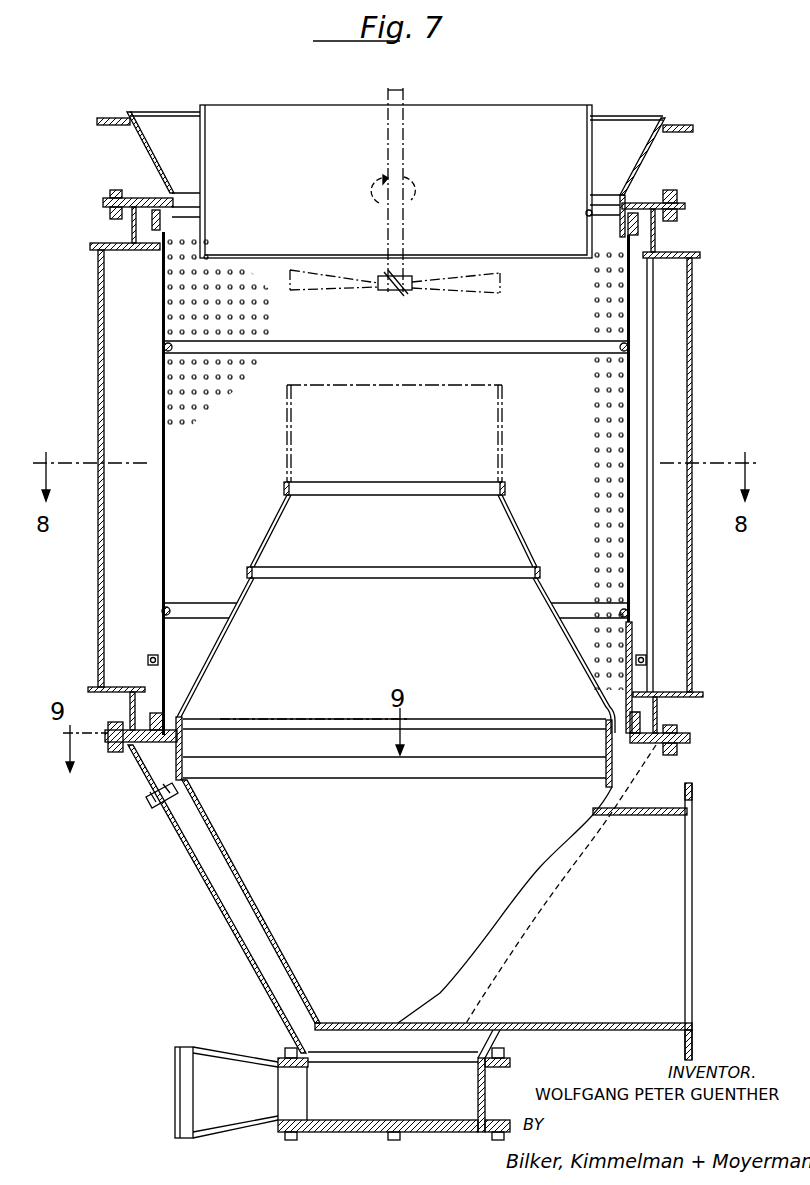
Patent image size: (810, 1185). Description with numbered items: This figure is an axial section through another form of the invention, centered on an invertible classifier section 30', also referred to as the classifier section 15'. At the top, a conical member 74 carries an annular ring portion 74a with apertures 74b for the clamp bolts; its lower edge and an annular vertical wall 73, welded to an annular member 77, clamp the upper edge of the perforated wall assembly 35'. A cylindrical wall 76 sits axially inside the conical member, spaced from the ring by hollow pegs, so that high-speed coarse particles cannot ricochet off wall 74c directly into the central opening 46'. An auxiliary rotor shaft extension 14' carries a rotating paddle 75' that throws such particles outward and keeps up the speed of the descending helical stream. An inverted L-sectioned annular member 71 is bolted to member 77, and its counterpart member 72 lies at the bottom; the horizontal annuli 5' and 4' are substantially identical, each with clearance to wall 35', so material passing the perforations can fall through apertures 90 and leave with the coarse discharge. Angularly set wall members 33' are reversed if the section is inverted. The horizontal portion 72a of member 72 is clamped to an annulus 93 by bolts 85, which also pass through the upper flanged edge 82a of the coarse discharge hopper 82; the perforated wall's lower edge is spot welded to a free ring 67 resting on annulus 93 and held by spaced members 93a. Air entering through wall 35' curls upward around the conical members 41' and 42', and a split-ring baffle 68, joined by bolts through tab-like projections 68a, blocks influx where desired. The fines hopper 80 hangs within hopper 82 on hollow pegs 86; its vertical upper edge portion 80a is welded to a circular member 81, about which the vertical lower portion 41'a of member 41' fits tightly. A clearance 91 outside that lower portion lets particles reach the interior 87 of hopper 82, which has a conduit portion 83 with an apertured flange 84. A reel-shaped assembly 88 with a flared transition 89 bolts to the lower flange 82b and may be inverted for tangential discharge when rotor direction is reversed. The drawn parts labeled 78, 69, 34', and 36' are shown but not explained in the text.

The auxiliary rotor shaft extension 14' is at (412, 190).
The cylindrical wall 76 is at (592, 130).
The wall of conical member 74c is at (146, 135).
The apertures 74b is at (690, 118).
The annular ring portion 74a is at (694, 128).
The connecting rod 78 is at (597, 213).
The conical member 74 is at (642, 165).
The annular member 77 is at (132, 198).
The annular vertical wall 73 is at (626, 205).
The inverted L-sectioned annular member 71 is at (130, 233).
The seal block 69 is at (640, 226).
The horizontal annulus 5' is at (110, 262).
The wall assembly 35' is at (197, 483).
The wall members 33' is at (81, 468).
The rotating paddle 75' is at (395, 300).
The annular space 34' is at (91, 357).
The baffle ring 36' is at (395, 479).
The classifier section 30' is at (74, 405).
The opening 46' is at (394, 480).
The conical portion 42' is at (384, 536).
The classifier section 15' is at (69, 565).
The tab-like projections 68a is at (150, 658).
The conical member 41' is at (396, 655).
The vertical lower portion 41'a is at (185, 711).
The split-ring baffle 68 is at (632, 640).
The free ring 67 is at (640, 700).
The clearance 91 is at (615, 728).
The apertures 90 is at (650, 733).
The horizontal portion 72a is at (680, 735).
The bolts 85 is at (742, 752).
The annular member 72 is at (125, 700).
The horizontal annulus 4' is at (141, 706).
The annulus 93 is at (110, 742).
The circular member 81 is at (185, 750).
The vertical upper edge portion 80a is at (612, 787).
The spaced members 93a is at (640, 748).
The upper flanged edge 82a is at (680, 755).
The apertured flange 84 is at (692, 790).
The hollow pegs 86 is at (170, 803).
The conduit portion 83 is at (660, 863).
The fines hopper 80 is at (243, 885).
The coarse discharge hopper 82 is at (237, 922).
The interior 87 is at (265, 955).
The lower flange 82b is at (282, 1060).
The transition 89 is at (155, 1127).
The reel-shaped assembly 88 is at (358, 1124).